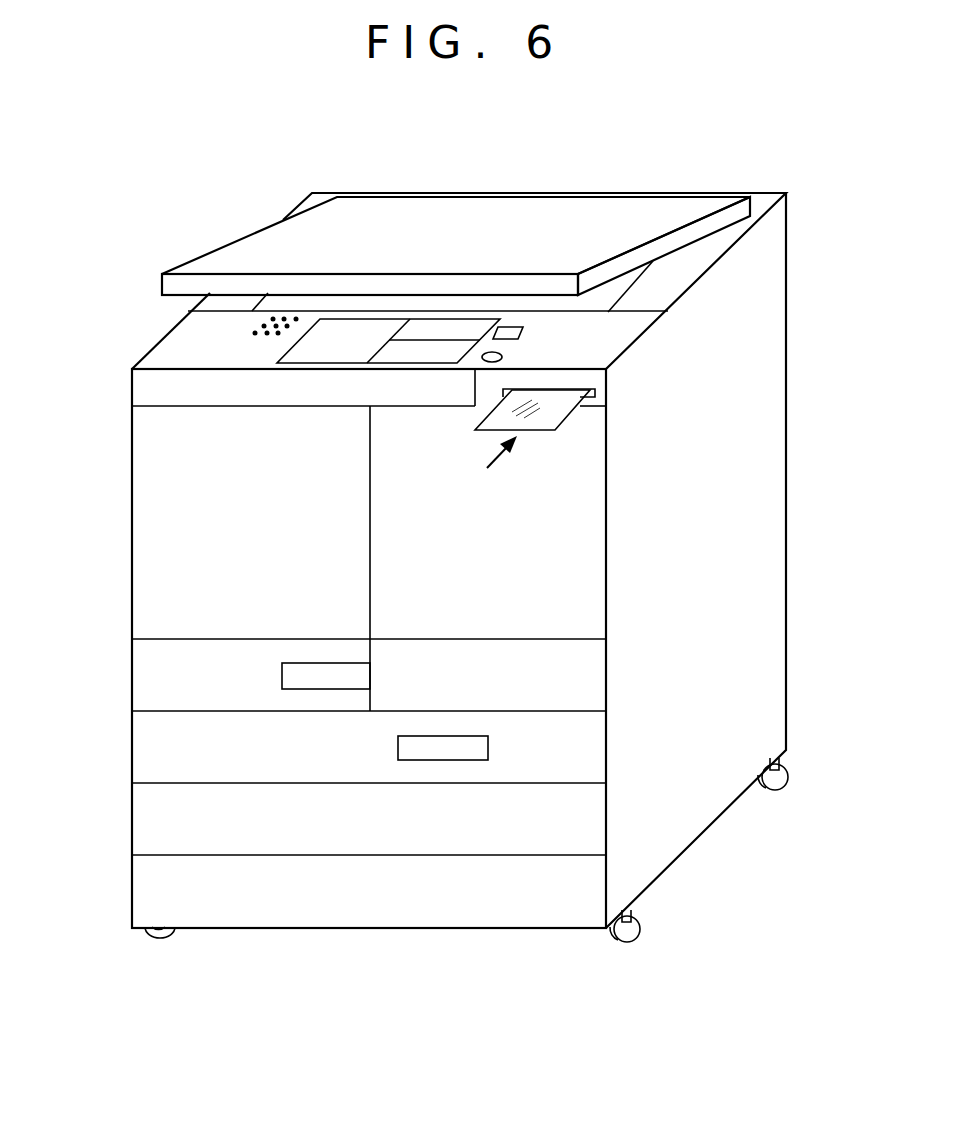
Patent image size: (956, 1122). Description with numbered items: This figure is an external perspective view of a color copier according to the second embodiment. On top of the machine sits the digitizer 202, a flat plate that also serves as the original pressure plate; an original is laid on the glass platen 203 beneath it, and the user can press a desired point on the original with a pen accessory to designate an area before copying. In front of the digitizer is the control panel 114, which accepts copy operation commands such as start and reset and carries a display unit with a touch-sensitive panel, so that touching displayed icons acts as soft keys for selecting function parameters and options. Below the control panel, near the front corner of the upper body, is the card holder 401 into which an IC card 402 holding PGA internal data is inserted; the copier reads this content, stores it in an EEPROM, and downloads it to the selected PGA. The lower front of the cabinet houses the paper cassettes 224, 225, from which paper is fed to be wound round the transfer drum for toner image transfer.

The control panel 114 is at (360, 340).
The digitizer 202 is at (613, 213).
The glass platen 203 is at (278, 307).
The card holder 401 is at (590, 382).
The IC card 402 is at (552, 417).
The paper cassette 224 is at (170, 672).
The paper cassette 225 is at (170, 750).